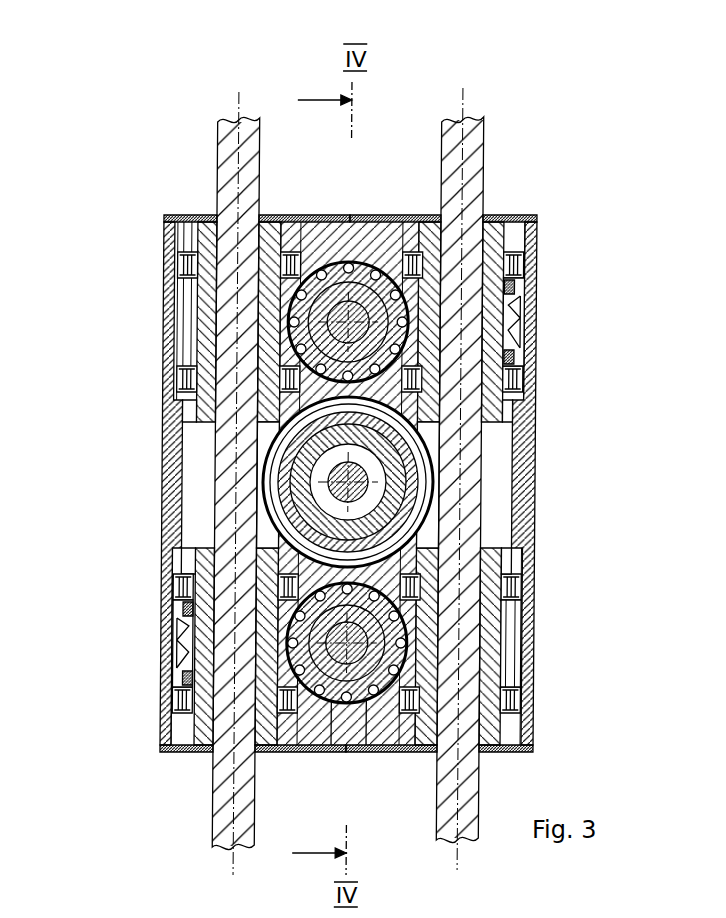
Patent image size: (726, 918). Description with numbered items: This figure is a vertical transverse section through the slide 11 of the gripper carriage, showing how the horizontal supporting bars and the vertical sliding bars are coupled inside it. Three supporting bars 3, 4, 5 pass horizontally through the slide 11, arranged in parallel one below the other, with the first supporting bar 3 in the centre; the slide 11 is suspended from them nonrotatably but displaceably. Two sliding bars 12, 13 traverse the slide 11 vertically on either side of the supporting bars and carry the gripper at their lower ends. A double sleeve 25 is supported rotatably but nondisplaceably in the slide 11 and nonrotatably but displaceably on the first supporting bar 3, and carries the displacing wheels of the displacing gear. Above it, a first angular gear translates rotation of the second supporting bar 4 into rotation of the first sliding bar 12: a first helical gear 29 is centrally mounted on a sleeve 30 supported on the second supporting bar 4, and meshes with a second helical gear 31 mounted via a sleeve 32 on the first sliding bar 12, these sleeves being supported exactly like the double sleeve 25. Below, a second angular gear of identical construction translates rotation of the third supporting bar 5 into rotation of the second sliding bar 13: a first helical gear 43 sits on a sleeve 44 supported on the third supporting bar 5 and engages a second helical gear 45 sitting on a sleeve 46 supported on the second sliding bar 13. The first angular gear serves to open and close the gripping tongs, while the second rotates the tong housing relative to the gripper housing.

The first supporting bar 3 is at (356, 477).
The second supporting bar 4 is at (371, 318).
The third supporting bar 5 is at (363, 645).
The slide 11 is at (535, 242).
The first sliding bar 12 is at (473, 170).
The second sliding bar 13 is at (223, 163).
The double sleeve 25 is at (373, 467).
The first helical gear 29 is at (325, 215).
The sleeve 30 is at (370, 215).
The second helical gear 31 is at (529, 330).
The sleeve 32 is at (491, 405).
The first helical gear 43 is at (335, 752).
The sleeve 44 is at (370, 752).
The second helical gear 45 is at (188, 652).
The sleeve 46 is at (176, 745).